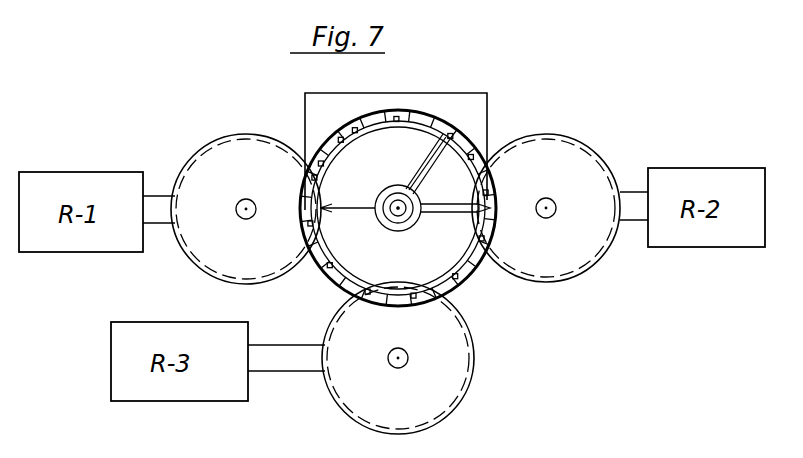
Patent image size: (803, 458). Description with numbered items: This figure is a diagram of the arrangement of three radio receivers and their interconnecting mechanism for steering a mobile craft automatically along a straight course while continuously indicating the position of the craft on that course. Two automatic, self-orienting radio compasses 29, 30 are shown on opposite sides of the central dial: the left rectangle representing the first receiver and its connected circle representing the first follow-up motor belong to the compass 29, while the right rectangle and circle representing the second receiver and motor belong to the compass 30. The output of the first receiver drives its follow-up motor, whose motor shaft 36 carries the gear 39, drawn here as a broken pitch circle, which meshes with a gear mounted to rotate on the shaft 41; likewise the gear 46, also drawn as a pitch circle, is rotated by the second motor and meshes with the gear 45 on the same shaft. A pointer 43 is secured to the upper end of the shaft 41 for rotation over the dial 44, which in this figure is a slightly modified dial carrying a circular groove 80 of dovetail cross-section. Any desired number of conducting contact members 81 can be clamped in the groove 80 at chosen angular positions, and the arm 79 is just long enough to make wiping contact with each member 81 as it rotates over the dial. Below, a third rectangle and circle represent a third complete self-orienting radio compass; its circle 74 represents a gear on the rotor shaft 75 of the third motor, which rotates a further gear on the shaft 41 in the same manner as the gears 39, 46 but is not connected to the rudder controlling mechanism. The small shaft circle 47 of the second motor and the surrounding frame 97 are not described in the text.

The automatic radio compass 29 is at (179, 268).
The automatic radio compass 30 is at (622, 263).
The motor shaft 36 is at (236, 209).
The gear 39 is at (210, 150).
The shaft 41 is at (408, 202).
The pointer 43 is at (460, 214).
The dial 44 is at (331, 289).
The gear 45 is at (344, 212).
The gear 46 is at (585, 145).
The motor shaft M-2 47 is at (556, 208).
The gear 74 is at (474, 348).
The rotor shaft 75 is at (408, 354).
The arm 79 is at (420, 157).
The circular groove 80 is at (470, 282).
The conducting contact member 81 is at (446, 132).
The frame 97 is at (365, 95).